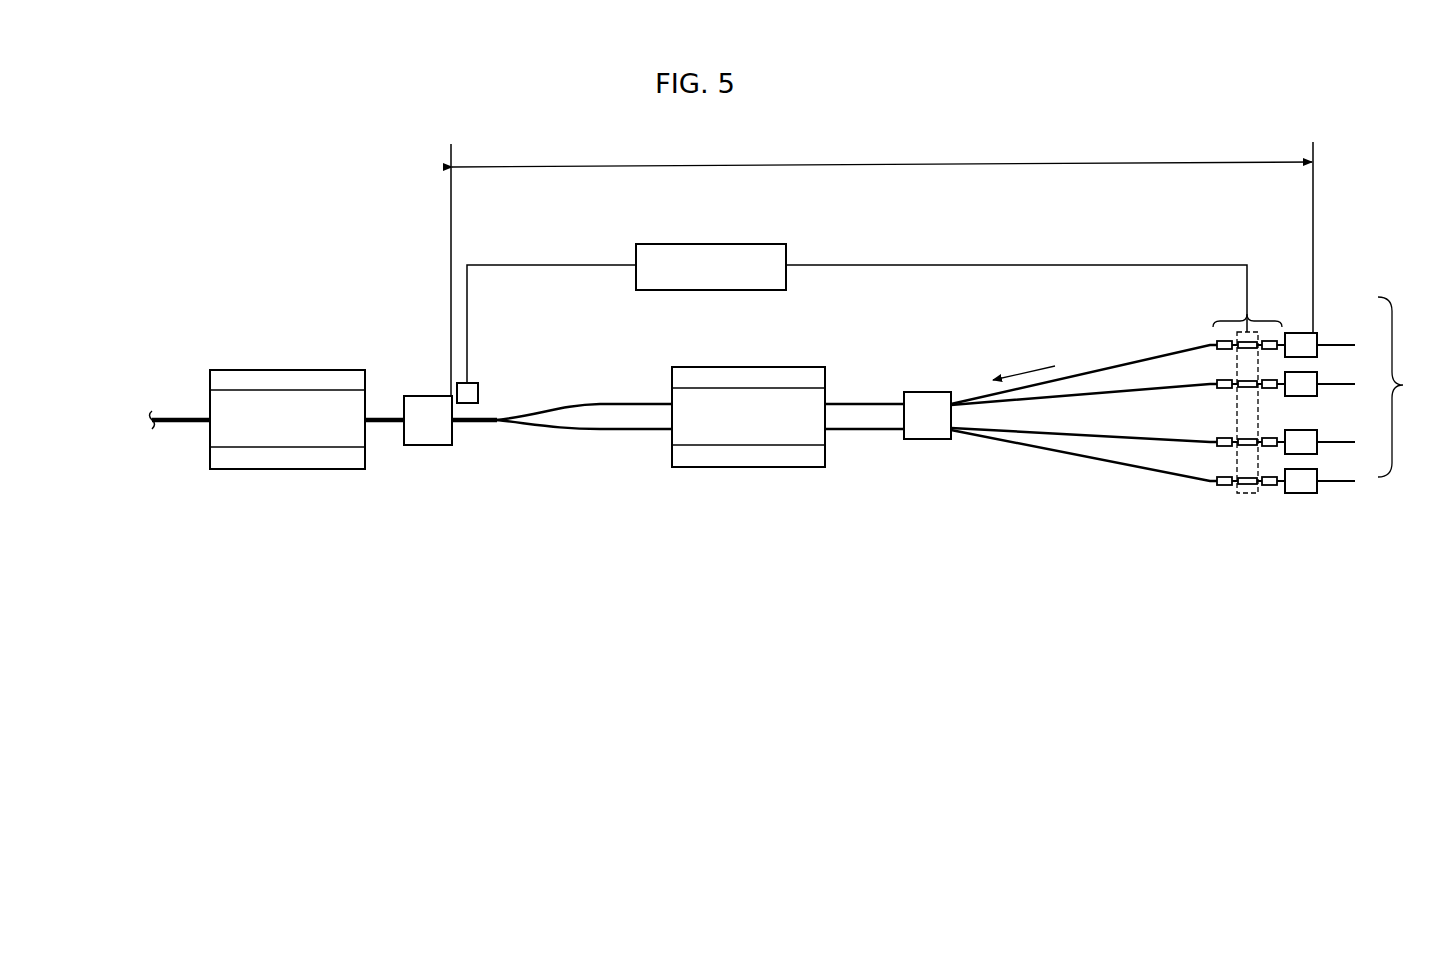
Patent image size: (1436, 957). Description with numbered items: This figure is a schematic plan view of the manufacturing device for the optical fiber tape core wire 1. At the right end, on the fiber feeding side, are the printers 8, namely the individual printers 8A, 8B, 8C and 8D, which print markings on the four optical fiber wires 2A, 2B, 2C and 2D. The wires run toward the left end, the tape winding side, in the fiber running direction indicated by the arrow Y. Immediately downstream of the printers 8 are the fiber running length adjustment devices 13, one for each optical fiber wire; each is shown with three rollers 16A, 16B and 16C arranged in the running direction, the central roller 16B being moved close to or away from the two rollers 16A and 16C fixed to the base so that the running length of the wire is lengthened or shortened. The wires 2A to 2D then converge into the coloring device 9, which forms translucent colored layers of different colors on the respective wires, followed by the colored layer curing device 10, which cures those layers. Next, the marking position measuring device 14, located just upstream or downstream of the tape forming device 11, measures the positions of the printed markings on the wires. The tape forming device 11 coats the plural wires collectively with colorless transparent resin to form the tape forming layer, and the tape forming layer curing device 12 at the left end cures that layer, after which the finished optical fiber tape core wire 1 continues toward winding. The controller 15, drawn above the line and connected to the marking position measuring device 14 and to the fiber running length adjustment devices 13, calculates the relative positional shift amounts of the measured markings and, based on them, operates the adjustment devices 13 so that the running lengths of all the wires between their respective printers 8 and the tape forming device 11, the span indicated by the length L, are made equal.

The optical fiber 1 is at (172, 415).
The optical fiber wire 2A is at (1122, 366).
The optical fiber wire 2B is at (1086, 394).
The optical fiber wire 2C is at (1090, 436).
The optical fiber wire 2D is at (1133, 466).
The printers 8 is at (1398, 387).
The printer 8A is at (1318, 333).
The printer 8B is at (1318, 374).
The printer 8C is at (1318, 431).
The printer 8D is at (1318, 470).
The coloring device 9 is at (927, 392).
The colored layer curing device 10 is at (745, 367).
The tape forming device 11 is at (428, 396).
The tape forming layer curing device 12 is at (290, 370).
The fiber running length adjustment device 13 is at (1248, 316).
The marking position measuring device 14 is at (479, 393).
The controller 15 is at (711, 244).
The roller 16A is at (1270, 486).
The central roller 16B is at (1248, 495).
The roller 16C is at (1224, 486).
The length L is at (882, 264).
The arrow Y is at (1025, 368).